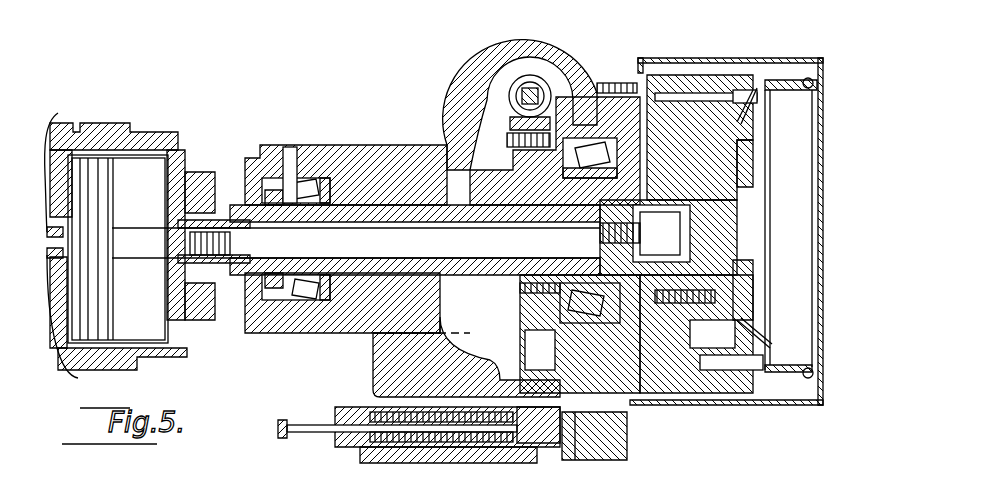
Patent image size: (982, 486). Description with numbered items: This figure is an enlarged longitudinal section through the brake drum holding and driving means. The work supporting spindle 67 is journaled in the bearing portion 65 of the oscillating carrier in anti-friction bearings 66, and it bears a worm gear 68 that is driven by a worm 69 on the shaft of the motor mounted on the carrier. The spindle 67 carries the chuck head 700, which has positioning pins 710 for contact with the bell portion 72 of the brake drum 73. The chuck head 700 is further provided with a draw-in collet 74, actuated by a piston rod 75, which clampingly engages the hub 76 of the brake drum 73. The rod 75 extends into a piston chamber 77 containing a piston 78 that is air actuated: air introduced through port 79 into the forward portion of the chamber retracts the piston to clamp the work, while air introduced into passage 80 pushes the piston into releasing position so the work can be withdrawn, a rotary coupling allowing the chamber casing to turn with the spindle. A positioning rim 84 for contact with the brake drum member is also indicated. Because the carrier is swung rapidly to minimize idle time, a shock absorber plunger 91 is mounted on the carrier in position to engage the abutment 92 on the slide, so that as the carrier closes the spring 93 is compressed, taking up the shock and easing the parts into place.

The bearing portion 65 is at (352, 160).
The anti-friction bearings 66 is at (307, 187).
The work supporting spindle 67 is at (403, 213).
The worm gear 68 is at (468, 140).
The worm 69 is at (542, 93).
The chuck head 700 is at (715, 77).
The positioning pins 710 is at (755, 97).
The bell portion 72 is at (765, 88).
The brake drum 73 is at (802, 362).
The draw-in collet 74 is at (682, 275).
The piston rod 75 is at (258, 248).
The hub 76 is at (745, 187).
The piston chamber 77 is at (148, 160).
The piston 78 is at (93, 167).
The port 79 is at (67, 325).
The passage 80 is at (60, 162).
The positioning rim 84 is at (600, 380).
The plunger 91 is at (548, 440).
The abutment 92 is at (592, 447).
The spring 93 is at (470, 432).